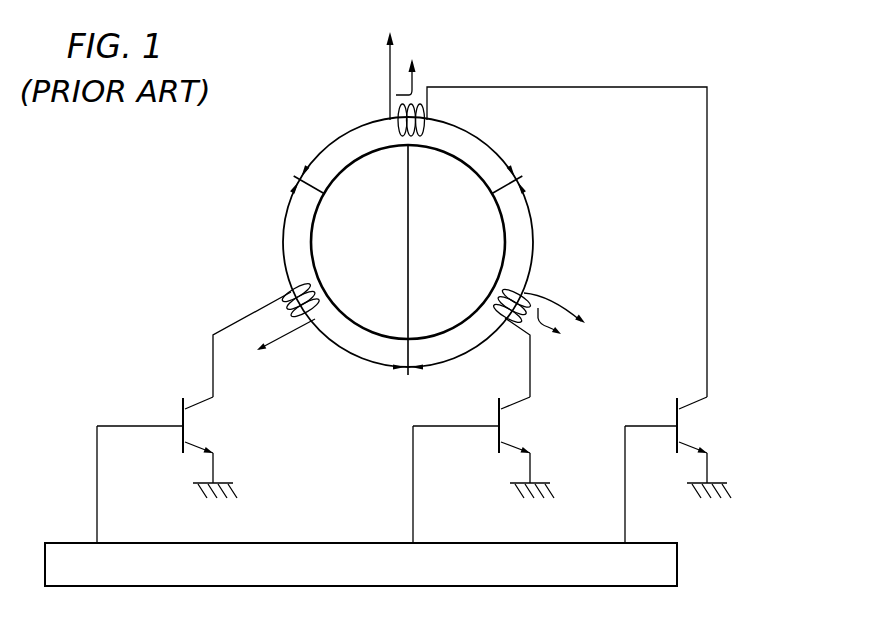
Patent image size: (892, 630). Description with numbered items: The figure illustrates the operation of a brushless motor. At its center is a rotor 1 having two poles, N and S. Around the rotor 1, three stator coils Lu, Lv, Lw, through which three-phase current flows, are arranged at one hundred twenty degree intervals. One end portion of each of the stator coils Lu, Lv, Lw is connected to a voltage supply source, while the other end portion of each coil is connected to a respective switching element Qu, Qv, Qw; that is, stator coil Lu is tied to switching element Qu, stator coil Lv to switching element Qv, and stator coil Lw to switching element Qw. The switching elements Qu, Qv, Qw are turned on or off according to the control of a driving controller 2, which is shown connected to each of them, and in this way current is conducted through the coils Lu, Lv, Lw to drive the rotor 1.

The rotor 1 is at (486, 158).
The driving controller 2 is at (677, 565).
The stator coil Lv is at (536, 204).
The stator coil Lw is at (279, 339).
The stator coil Lu is at (550, 341).
The switching element Qw is at (171, 470).
The switching element Qu is at (486, 470).
The switching element Qv is at (681, 470).